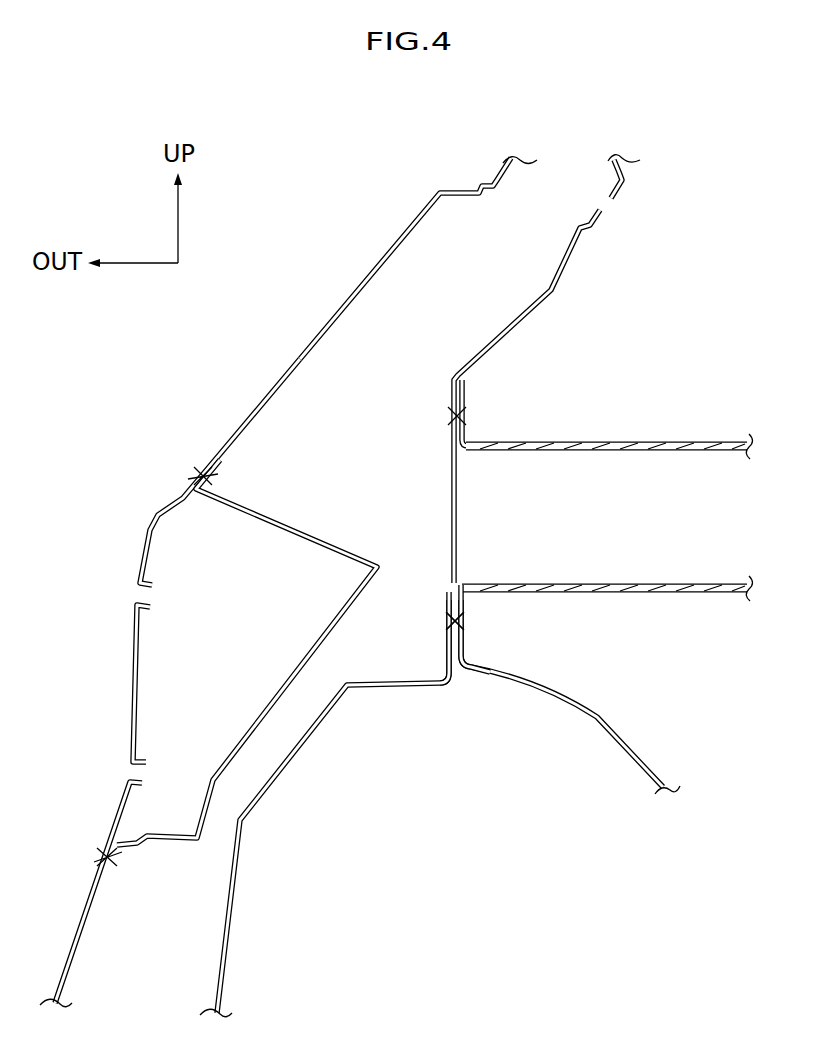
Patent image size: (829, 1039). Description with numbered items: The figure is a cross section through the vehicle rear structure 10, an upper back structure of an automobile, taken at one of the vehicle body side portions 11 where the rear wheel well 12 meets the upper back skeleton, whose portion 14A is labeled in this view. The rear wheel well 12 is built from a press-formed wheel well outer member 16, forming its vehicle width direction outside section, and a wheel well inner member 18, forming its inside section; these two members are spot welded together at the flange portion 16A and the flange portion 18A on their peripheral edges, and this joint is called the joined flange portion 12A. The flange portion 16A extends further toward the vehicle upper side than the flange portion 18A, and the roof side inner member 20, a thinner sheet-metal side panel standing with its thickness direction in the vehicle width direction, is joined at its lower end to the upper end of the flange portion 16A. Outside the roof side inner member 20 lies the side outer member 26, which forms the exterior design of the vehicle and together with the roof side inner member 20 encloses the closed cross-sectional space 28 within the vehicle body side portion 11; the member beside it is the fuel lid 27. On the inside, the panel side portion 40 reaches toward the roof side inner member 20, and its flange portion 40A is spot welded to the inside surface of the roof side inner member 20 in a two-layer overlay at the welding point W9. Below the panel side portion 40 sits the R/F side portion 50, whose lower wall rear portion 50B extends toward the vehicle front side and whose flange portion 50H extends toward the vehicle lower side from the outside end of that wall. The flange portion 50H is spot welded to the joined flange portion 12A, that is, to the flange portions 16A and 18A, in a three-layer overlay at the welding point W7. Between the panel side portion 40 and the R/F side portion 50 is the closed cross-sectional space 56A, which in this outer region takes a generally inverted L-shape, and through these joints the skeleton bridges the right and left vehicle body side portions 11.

The vehicle rear structure 10 is at (752, 255).
The vehicle body side portion 11 is at (328, 294).
The rear wheel well 12 is at (680, 742).
The joined flange portion 12A is at (446, 621).
The floor panel end portion 14A is at (603, 415).
The wheel well outer member 16 is at (375, 702).
The flange portion 16A is at (446, 646).
The wheel well inner member 18 is at (601, 746).
The flange portion 18A is at (470, 672).
The roof side inner member 20 is at (567, 267).
The side outer member 26 is at (270, 388).
The fuel lid 27 is at (132, 663).
The closed cross-sectional space 28 is at (352, 492).
The panel side portion 40 is at (704, 432).
The flange portion 40A is at (465, 393).
The R/F side portion 50 is at (708, 603).
The lower wall rear portion 50B is at (615, 593).
The flange portion 50H is at (467, 641).
The closed cross-sectional space 56A is at (683, 517).
The welding point W7 is at (450, 607).
The welding point W9 is at (447, 409).